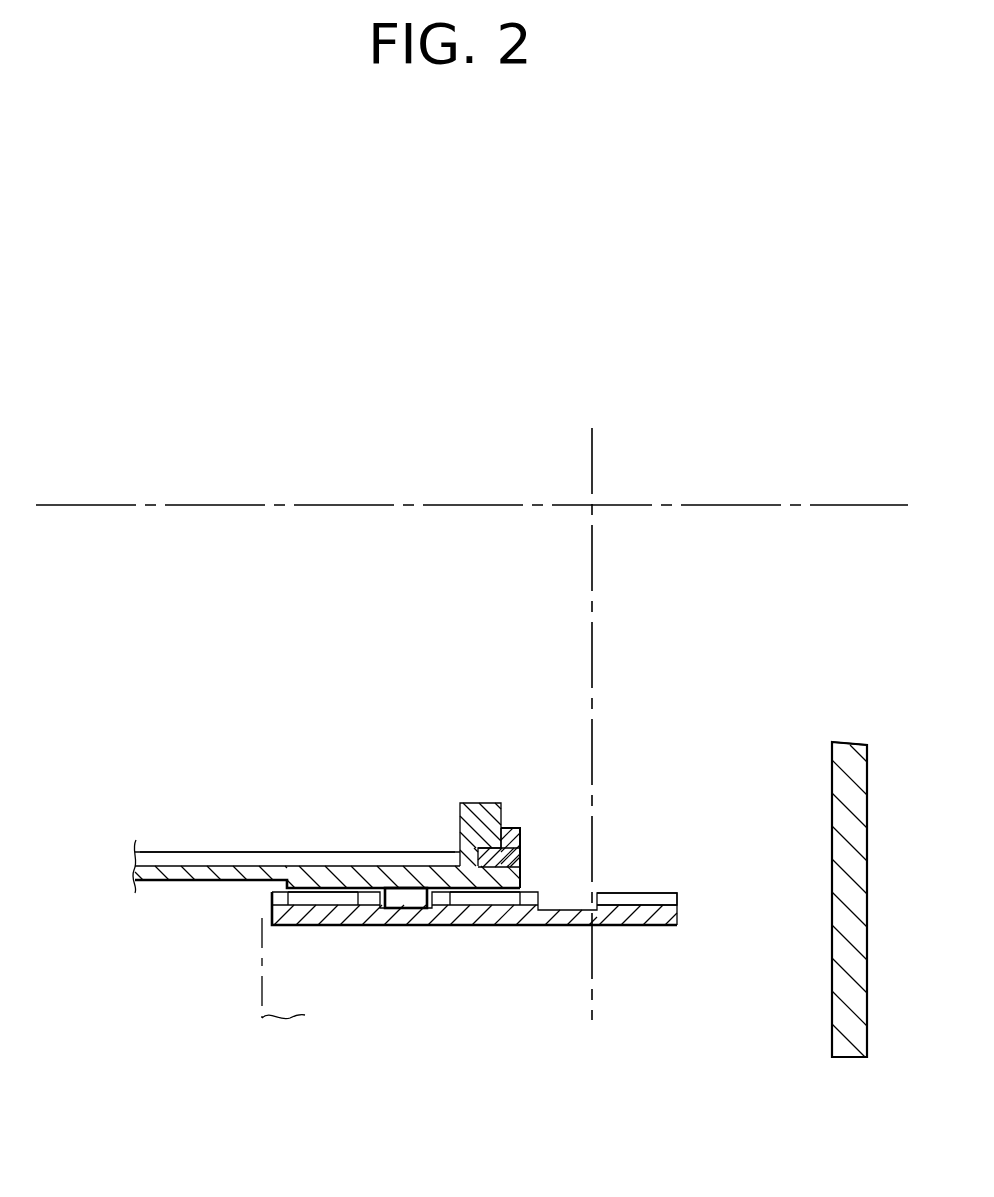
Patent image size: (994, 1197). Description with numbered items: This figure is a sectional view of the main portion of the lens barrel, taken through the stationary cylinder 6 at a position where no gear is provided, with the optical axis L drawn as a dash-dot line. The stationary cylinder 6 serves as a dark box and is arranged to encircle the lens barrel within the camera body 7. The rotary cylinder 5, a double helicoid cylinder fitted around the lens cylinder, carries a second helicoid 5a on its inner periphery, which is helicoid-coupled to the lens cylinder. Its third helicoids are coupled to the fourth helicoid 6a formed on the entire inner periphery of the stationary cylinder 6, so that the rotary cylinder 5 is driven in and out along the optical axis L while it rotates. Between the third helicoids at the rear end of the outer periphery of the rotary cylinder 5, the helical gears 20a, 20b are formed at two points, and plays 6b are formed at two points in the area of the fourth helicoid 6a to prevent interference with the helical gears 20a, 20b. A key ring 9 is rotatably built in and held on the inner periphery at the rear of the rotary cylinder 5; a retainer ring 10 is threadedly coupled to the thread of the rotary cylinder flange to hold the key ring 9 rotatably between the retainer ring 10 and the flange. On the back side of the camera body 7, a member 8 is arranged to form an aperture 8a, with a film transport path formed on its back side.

The rotary cylinder 5 is at (180, 881).
The second helicoid 5a is at (252, 853).
The stationary cylinder 6 is at (545, 926).
The fourth helicoid 6a is at (641, 893).
The plays 6b is at (372, 926).
The camera body 7 is at (262, 968).
The member 8 is at (832, 785).
The aperture 8a is at (840, 742).
The key ring 9 is at (481, 803).
The retainer ring 10 is at (510, 828).
The helical gear 20a is at (455, 961).
The helical gear 20b is at (403, 900).
The optical axis L is at (745, 510).